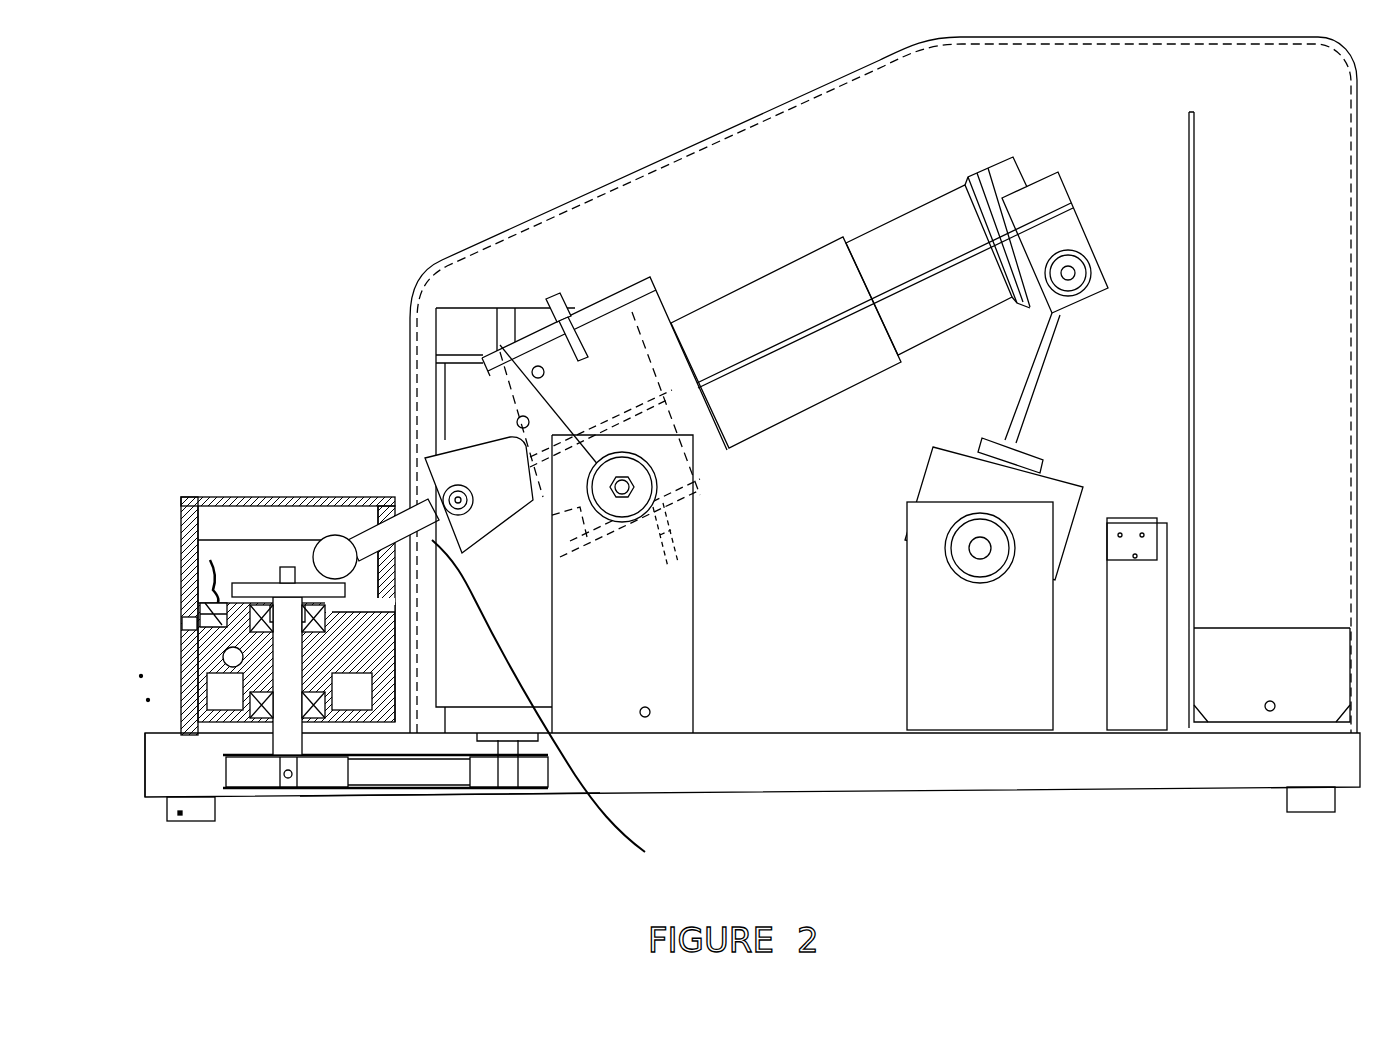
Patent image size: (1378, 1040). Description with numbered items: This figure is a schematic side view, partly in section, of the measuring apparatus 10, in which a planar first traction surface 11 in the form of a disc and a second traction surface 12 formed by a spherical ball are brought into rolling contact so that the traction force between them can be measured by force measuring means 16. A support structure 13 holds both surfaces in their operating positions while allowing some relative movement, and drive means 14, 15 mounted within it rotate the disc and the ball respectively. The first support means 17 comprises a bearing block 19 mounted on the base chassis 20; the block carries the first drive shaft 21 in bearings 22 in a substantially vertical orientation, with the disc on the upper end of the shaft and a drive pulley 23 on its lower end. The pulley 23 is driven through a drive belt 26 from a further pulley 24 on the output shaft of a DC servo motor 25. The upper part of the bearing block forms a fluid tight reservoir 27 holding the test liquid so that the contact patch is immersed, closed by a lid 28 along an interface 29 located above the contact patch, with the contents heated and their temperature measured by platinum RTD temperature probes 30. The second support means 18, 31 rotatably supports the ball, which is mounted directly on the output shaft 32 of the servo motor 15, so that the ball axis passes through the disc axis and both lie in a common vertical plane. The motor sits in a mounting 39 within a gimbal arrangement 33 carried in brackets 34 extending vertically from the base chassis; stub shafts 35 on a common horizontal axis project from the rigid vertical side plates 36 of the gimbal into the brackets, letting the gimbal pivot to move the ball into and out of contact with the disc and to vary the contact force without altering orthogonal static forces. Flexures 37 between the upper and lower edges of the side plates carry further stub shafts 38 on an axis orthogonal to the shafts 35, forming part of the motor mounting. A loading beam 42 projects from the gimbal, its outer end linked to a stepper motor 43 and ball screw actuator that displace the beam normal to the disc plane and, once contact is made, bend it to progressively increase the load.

The measuring apparatus 10 is at (420, 162).
The first traction surface 11 is at (240, 580).
The second traction surface 12 is at (257, 562).
The support structure 13 is at (583, 830).
The first drive means 14 is at (382, 823).
The second drive means 15 is at (740, 283).
The force measuring means 16 is at (338, 530).
The first support means 17 is at (142, 685).
The second support means 18 is at (720, 510).
The bearing block 19 is at (180, 650).
The base chassis 20 is at (167, 772).
The first drive shaft 21 is at (180, 607).
The bearings 22 is at (177, 578).
The drive pulley 23 is at (314, 775).
The further pulley 24 is at (507, 788).
The DC servo motor 25 is at (450, 443).
The drive belt 26 is at (416, 768).
The fluid tight reservoir 27 is at (235, 497).
The lid 28 is at (337, 497).
The interface 29 is at (177, 533).
The temperature probes 30 is at (178, 557).
The second support means 31 is at (500, 345).
The output shaft 32 is at (400, 520).
The gimbal arrangement 33 is at (612, 362).
The brackets 34 is at (645, 593).
The stub shafts 35 is at (452, 405).
The side plates 36 is at (642, 323).
The flexures 37 is at (598, 307).
The further stub shafts 38 is at (540, 352).
The mounting 39 is at (412, 467).
The loading beam 42 is at (827, 313).
The stepper motor 43 is at (933, 445).